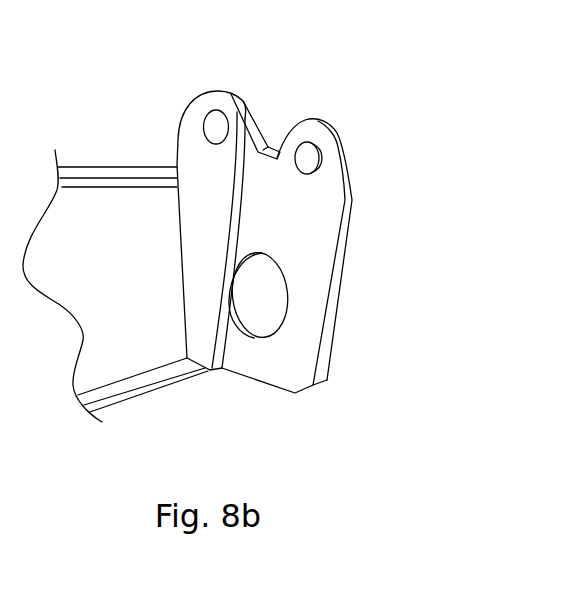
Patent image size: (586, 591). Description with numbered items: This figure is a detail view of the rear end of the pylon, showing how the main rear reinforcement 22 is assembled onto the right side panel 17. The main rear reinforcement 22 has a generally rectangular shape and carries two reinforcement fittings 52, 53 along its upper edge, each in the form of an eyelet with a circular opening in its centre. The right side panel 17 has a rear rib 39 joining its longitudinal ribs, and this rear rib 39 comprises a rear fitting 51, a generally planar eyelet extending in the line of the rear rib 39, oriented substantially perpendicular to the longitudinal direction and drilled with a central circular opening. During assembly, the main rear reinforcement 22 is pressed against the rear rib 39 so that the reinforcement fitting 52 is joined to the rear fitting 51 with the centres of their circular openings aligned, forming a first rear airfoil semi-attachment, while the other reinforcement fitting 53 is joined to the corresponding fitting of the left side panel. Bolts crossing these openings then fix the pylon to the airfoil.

The right side panel 17 is at (103, 203).
The main rear reinforcement 22 is at (302, 238).
The rear rib 39 is at (198, 348).
The rear fitting 51 is at (197, 145).
The reinforcement fitting 52 is at (250, 100).
The reinforcement fitting 53 is at (340, 136).